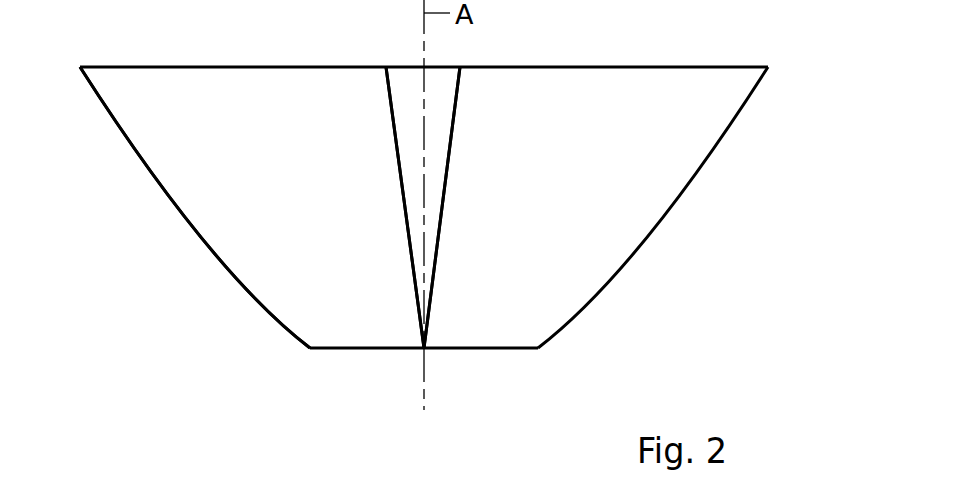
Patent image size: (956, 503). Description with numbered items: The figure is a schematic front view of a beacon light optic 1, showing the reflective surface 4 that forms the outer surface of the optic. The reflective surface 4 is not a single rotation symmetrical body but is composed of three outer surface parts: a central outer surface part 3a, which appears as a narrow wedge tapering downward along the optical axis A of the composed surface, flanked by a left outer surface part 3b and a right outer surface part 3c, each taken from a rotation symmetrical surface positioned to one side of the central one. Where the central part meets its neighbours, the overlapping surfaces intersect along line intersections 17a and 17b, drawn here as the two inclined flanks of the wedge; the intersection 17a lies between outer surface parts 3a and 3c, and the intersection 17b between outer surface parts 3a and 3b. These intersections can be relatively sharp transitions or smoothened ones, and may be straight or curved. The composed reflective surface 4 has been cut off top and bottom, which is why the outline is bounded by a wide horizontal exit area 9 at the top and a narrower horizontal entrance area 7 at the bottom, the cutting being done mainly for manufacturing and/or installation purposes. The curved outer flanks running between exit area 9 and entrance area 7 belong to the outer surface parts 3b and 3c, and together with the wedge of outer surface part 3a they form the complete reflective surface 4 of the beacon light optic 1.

The beacon light optic 1 is at (426, 207).
The outer surface part 3a is at (408, 102).
The outer surface part 3b is at (265, 102).
The outer surface part 3c is at (582, 102).
The reflective surface 4 is at (298, 239).
The entrance area 7 is at (492, 349).
The exit area 9 is at (723, 66).
The intersection 17a is at (450, 162).
The intersection 17b is at (398, 162).